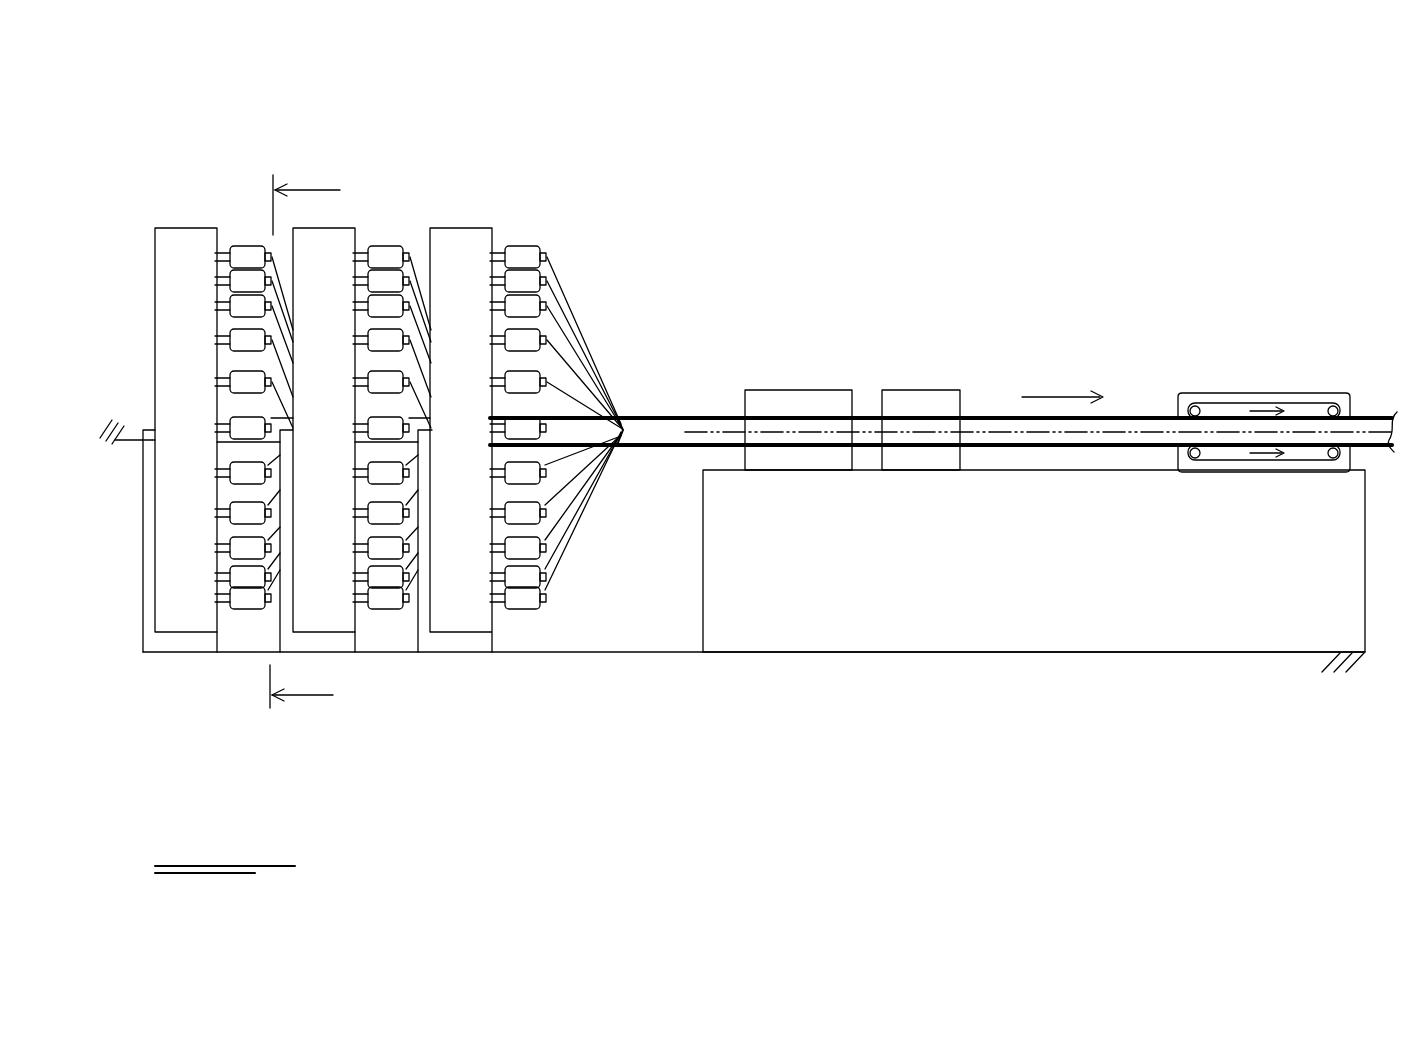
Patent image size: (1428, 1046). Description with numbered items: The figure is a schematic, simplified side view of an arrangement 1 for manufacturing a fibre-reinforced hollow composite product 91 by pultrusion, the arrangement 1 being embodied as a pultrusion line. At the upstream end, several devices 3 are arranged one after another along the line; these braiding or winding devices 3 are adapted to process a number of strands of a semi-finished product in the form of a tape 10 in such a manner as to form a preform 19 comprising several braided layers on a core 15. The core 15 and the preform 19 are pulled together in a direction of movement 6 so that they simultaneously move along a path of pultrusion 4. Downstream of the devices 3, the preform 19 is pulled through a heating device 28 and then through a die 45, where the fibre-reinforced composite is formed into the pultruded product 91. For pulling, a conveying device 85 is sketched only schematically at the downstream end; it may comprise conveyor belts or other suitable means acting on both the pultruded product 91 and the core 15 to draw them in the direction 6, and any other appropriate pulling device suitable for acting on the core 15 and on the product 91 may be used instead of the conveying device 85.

The arrangement 1 is at (1218, 72).
The devices 3 is at (186, 228).
The path of pultrusion 4 is at (1050, 433).
The direction of movement 6 is at (1055, 395).
The tape 10 is at (583, 340).
The core 15 is at (678, 435).
The preform 19 is at (672, 450).
The heating device 28 is at (808, 380).
The die 45 is at (929, 380).
The conveying device 85 is at (1265, 382).
The fibre-reinforced hollow composite product 91 is at (1372, 418).